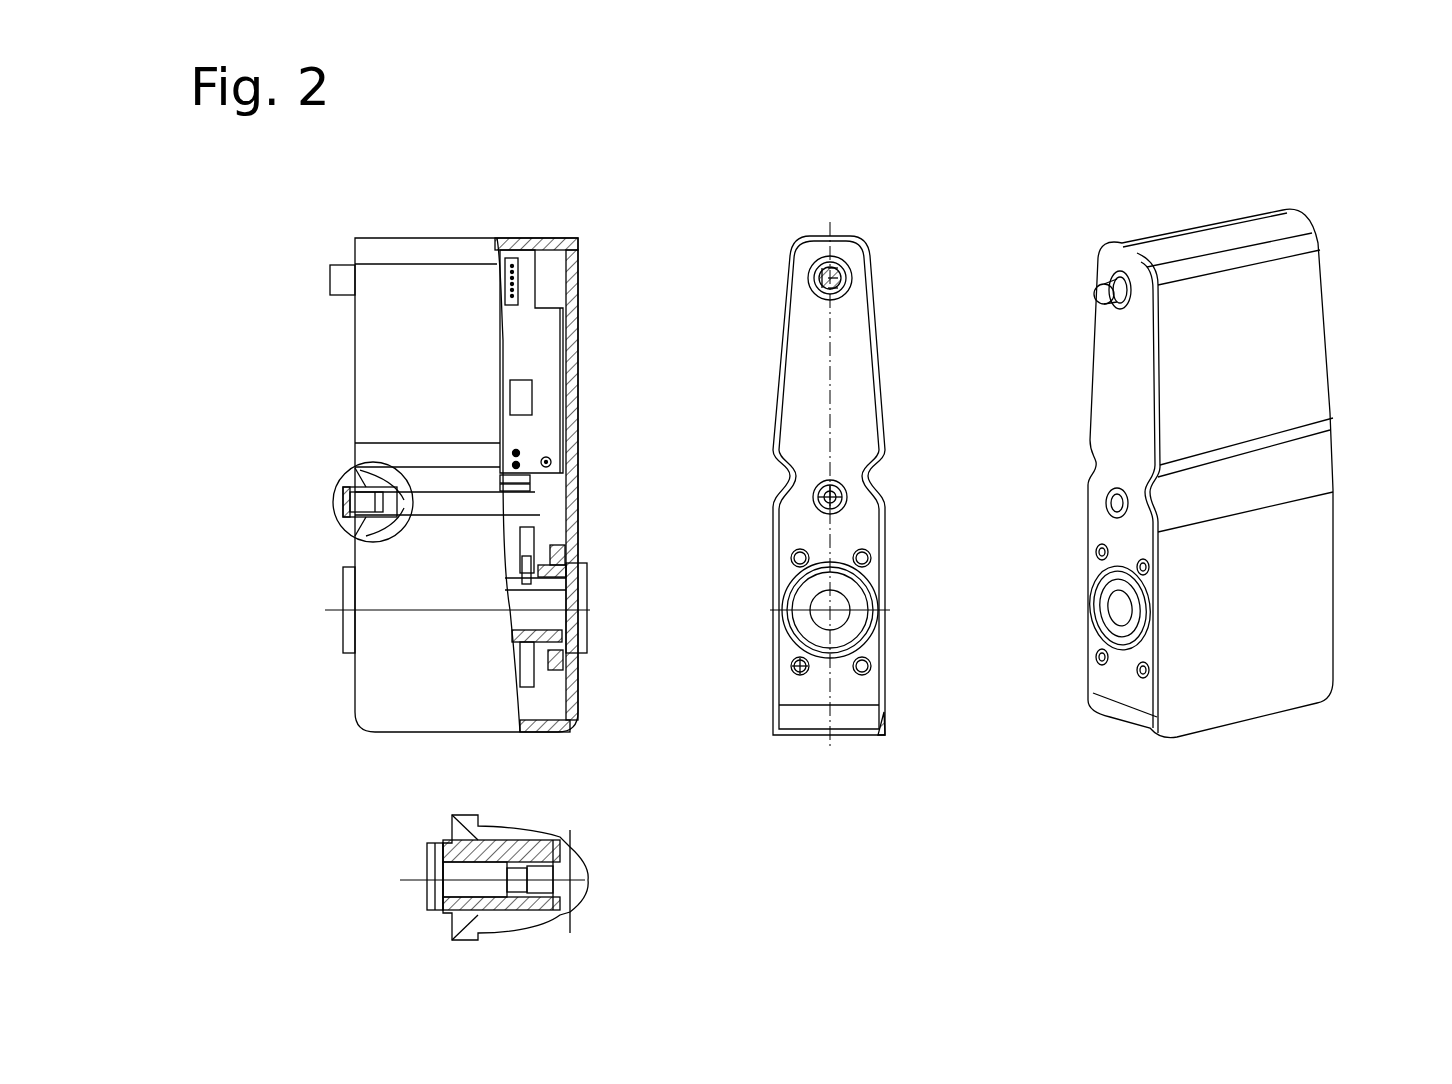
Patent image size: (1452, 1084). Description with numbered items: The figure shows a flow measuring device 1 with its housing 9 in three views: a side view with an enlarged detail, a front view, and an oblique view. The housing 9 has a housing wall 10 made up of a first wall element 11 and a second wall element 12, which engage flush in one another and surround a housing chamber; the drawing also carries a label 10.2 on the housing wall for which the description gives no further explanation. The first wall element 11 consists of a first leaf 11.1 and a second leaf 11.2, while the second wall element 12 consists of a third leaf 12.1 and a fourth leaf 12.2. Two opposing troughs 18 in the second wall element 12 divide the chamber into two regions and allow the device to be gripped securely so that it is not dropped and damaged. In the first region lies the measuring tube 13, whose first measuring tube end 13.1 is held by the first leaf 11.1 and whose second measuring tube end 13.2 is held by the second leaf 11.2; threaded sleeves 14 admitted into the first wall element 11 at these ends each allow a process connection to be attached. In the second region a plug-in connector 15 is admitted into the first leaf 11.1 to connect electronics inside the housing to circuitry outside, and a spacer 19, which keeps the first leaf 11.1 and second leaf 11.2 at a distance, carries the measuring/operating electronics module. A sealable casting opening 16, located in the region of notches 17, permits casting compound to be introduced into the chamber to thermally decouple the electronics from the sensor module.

The flow measuring device 1 is at (296, 231).
The housing 9 is at (417, 235).
The housing wall 10 is at (405, 330).
The partition wall 10.2 is at (385, 390).
The first wall element 11 is at (320, 378).
The first leaf 11.1 is at (810, 393).
The second leaf 11.2 is at (578, 438).
The second wall element 12 is at (385, 682).
The third leaf 12.1 is at (773, 703).
The fourth leaf 12.2 is at (786, 287).
The measuring tube 13 is at (823, 610).
The first measuring tube end 13.1 is at (343, 626).
The second measuring tube end 13.2 is at (568, 603).
The threaded sleeves 14 is at (1136, 573).
The plug-in connector 15 is at (850, 273).
The casting opening 16 is at (340, 525).
The notches 17 is at (1153, 493).
The troughs 18 is at (1277, 468).
The spacer 19 is at (545, 382).